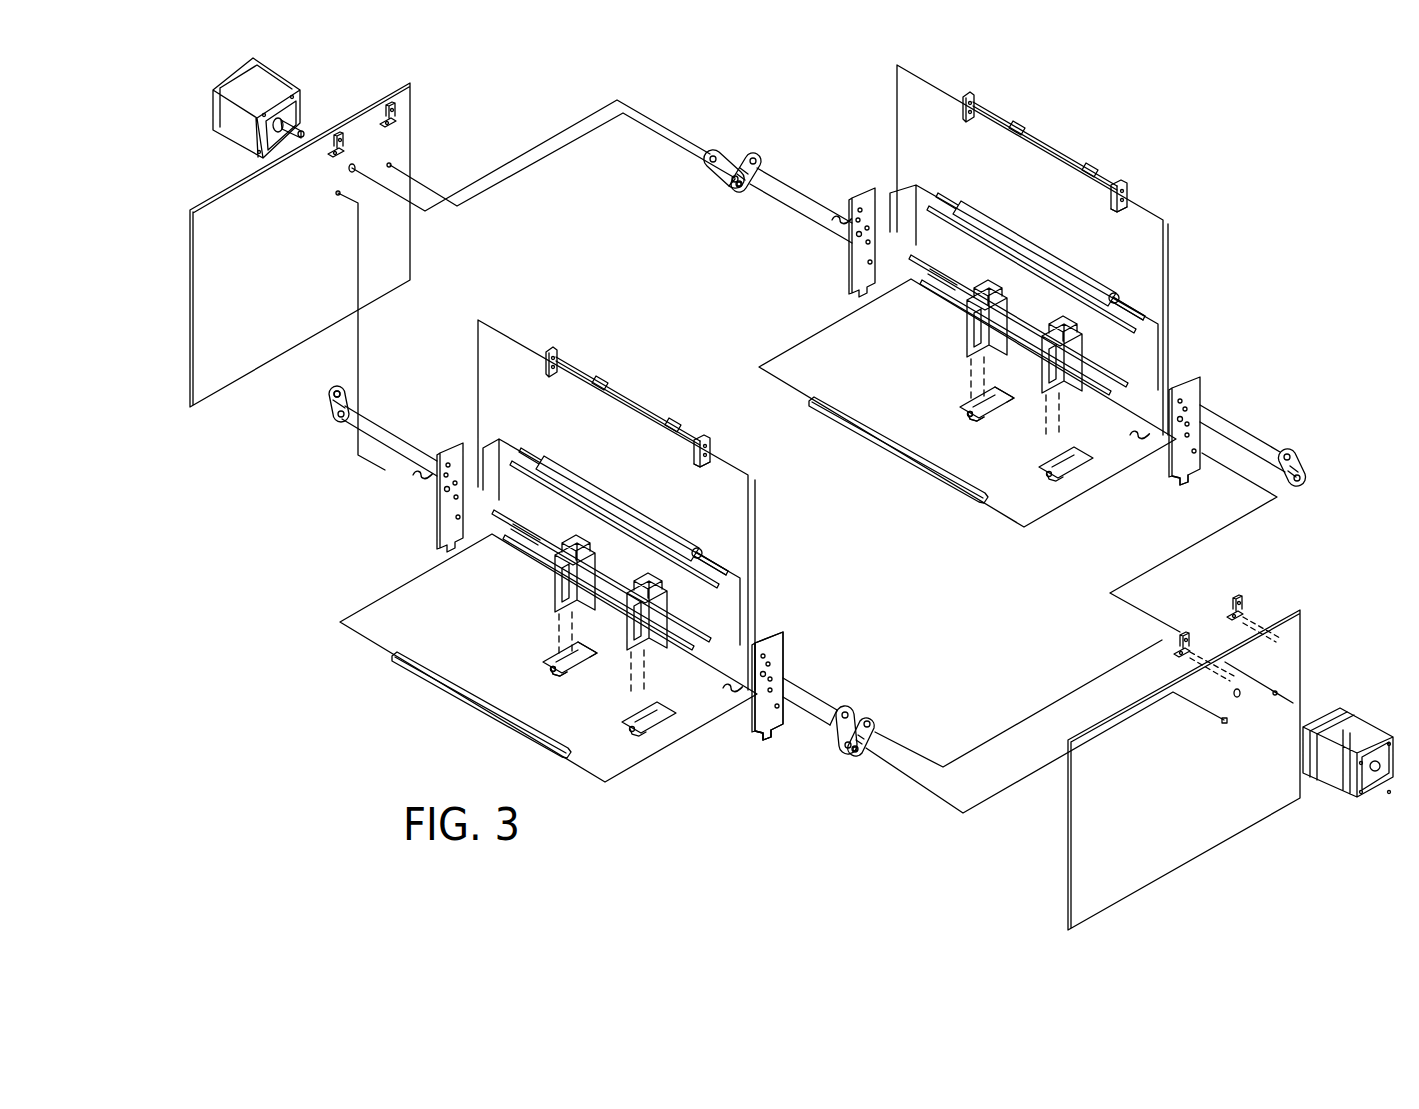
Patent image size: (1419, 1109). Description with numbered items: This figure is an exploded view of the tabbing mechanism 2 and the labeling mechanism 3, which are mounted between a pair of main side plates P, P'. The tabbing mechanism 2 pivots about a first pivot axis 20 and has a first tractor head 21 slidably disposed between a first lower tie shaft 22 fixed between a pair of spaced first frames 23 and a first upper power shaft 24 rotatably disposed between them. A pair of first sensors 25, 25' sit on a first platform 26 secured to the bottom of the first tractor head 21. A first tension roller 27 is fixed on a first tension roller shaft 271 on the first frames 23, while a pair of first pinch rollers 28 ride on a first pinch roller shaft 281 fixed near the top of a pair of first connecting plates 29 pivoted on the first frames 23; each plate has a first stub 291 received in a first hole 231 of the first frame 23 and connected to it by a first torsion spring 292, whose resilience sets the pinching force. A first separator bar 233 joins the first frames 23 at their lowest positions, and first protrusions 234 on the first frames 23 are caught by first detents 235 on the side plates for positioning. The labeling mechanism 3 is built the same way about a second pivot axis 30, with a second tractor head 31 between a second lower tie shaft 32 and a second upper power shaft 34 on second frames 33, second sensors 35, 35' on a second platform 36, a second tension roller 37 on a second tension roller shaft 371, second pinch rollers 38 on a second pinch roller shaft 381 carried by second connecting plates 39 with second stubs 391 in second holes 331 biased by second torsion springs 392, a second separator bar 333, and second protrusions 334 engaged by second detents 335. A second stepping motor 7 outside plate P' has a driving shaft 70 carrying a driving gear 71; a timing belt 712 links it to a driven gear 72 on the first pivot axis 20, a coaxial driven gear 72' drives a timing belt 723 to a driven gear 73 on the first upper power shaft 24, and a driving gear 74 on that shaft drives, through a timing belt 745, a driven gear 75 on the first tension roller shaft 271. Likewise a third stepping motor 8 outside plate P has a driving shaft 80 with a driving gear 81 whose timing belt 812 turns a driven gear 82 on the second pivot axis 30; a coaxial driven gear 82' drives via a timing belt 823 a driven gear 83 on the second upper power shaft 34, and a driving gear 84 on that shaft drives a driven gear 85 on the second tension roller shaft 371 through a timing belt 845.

The tabbing mechanism 2 is at (348, 575).
The labeling mechanism 3 is at (1182, 193).
The second stepping motor 7 is at (1340, 775).
The driving shaft 70 is at (1308, 760).
The third stepping motor 8 is at (280, 80).
The driving shaft 80 is at (300, 124).
The main side plate P is at (285, 276).
The main side plate P' is at (1184, 762).
The first pivot axis 20 is at (708, 590).
The first tractor head 21 is at (553, 590).
The first lower tie shaft 22 is at (517, 560).
The first frame 23 is at (443, 448).
The first upper power shaft 24 is at (545, 537).
The first sensor 25 is at (542, 690).
The first sensor 25' is at (596, 634).
The first platform 26 is at (540, 660).
The first tension roller 27 is at (628, 500).
The first tension roller shaft 271 is at (705, 560).
The first pinch roller 28 is at (601, 378).
The first pinch roller shaft 281 is at (655, 405).
The first connecting plate 29 is at (706, 438).
The first stub 291 is at (705, 468).
The first torsion spring 292 is at (729, 690).
The first hole 231 is at (757, 700).
The first separator bar 233 is at (440, 680).
The first protrusion 234 is at (785, 640).
The first detent 235 is at (344, 139).
The second pivot axis 30 is at (1115, 322).
The second tractor head 31 is at (965, 330).
The second lower tie shaft 32 is at (917, 280).
The second frame 33 is at (856, 200).
The second upper power shaft 34 is at (940, 285).
The second sensor 35 is at (963, 441).
The second sensor 35' is at (1015, 381).
The second platform 36 is at (955, 412).
The second tension roller 37 is at (1020, 238).
The second tension roller shaft 371 is at (1128, 302).
The second pinch roller 38 is at (1020, 125).
The second pinch roller shaft 381 is at (1068, 150).
The second connecting plate 39 is at (1122, 185).
The second stub 391 is at (1120, 210).
The second torsion spring 392 is at (1132, 435).
The second hole 331 is at (1180, 435).
The second separator bar 333 is at (898, 462).
The second protrusion 334 is at (1202, 383).
The second detent 335 is at (397, 112).
The driving gear 71 is at (870, 722).
The timing belt 712 is at (877, 740).
The driven gear 72 is at (847, 777).
The driven gear 72' is at (821, 771).
The timing belt 723 is at (830, 725).
The driven gear 73 is at (847, 708).
The driving gear 74 is at (345, 425).
The timing belt 745 is at (328, 400).
The driven gear 75 is at (340, 386).
The driving gear 81 is at (716, 150).
The timing belt 812 is at (715, 168).
The driven gear 82 is at (705, 205).
The driven gear 82' is at (738, 213).
The timing belt 823 is at (745, 155).
The driven gear 83 is at (762, 160).
The driving gear 84 is at (1295, 488).
The timing belt 845 is at (1305, 462).
The driven gear 85 is at (1296, 450).